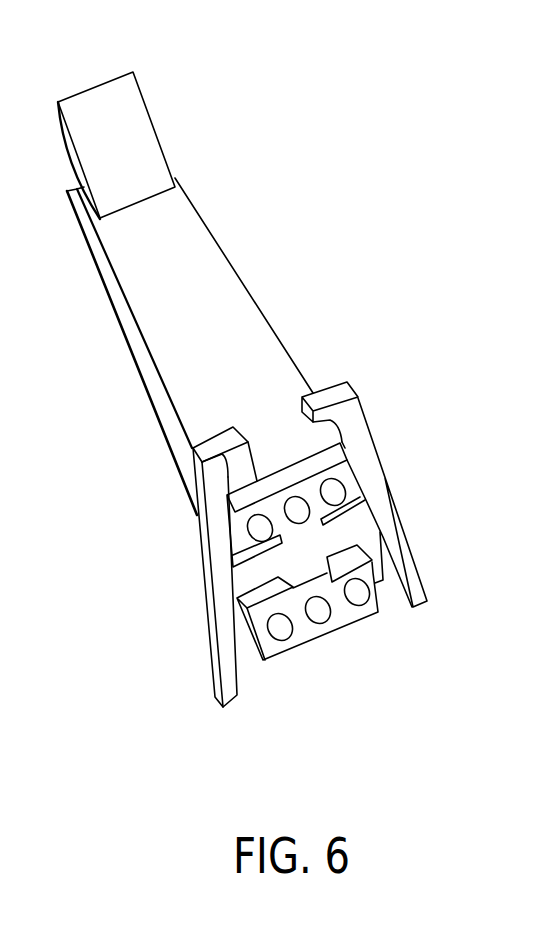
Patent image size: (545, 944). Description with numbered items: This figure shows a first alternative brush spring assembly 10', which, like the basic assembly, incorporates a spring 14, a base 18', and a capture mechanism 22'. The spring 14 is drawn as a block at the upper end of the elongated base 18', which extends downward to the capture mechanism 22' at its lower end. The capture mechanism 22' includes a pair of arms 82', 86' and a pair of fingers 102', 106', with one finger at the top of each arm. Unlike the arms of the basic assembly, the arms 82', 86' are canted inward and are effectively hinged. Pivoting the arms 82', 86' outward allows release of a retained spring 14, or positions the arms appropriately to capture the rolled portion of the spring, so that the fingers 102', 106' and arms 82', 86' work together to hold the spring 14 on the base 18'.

The brush spring assembly 10' is at (300, 382).
The spring 14 is at (163, 123).
The base 18' is at (203, 346).
The capture mechanism 22' is at (300, 503).
The arm 82' is at (170, 577).
The arm 86' is at (411, 502).
The finger 102' is at (157, 465).
The finger 106' is at (350, 370).